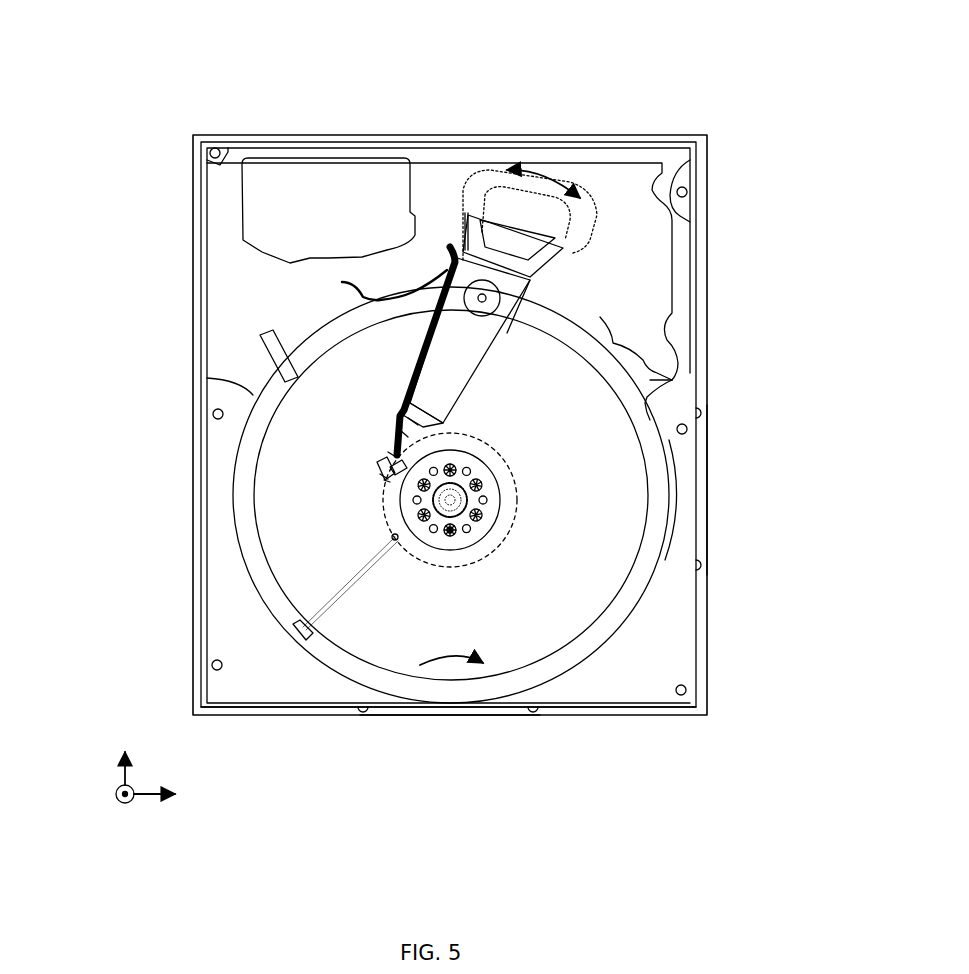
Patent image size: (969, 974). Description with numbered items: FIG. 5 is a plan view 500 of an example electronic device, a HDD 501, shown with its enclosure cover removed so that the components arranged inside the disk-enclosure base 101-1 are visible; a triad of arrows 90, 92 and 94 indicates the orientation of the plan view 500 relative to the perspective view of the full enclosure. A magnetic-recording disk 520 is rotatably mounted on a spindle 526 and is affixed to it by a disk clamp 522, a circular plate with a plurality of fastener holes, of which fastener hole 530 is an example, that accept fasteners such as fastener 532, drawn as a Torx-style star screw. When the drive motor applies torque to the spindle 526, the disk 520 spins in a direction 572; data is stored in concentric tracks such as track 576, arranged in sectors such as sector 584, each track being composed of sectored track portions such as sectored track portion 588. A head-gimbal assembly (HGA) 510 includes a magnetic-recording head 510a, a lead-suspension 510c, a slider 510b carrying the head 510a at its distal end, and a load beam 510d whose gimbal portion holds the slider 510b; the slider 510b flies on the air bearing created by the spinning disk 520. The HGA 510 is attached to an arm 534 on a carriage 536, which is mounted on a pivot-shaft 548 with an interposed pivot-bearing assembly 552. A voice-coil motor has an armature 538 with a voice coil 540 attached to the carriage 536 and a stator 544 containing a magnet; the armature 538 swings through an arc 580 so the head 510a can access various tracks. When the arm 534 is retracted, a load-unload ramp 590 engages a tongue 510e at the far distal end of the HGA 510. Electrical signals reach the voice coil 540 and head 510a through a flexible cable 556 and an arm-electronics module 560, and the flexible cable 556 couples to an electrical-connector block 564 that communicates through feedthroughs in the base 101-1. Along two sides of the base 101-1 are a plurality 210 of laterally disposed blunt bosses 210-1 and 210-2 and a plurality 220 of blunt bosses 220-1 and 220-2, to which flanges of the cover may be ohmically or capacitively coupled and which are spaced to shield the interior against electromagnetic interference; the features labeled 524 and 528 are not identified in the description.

The plan view 500 is at (124, 72).
The HDD 501 is at (684, 135).
The electrical-connector block 564 is at (262, 213).
The flexible cable 556 is at (342, 282).
The arm-electronics module 560 is at (447, 280).
The pivot-bearing assembly 552 is at (478, 298).
The load-unload ramp 590 is at (288, 378).
The head-gimbal assembly 510 is at (120, 390).
The magnetic-recording head 510a is at (385, 477).
The slider 510b is at (392, 455).
The lead-suspension 510c is at (407, 435).
The load beam 510d is at (417, 423).
The tongue 510e is at (387, 481).
The armature 538 is at (463, 240).
The voice coil 540 is at (479, 218).
The arc 580 is at (543, 175).
The stator 544 is at (650, 230).
The pivot-shaft 548 is at (490, 299).
The magnetic-recording disk 520 is at (548, 367).
The disk clamp 522 is at (557, 430).
The disk outer edge 524 is at (632, 433).
The carriage 536 is at (483, 325).
The arm 534 is at (440, 380).
The track 576 is at (477, 471).
The clamp screws 528 is at (495, 518).
The spindle 526 is at (453, 503).
The fastener hole 530 is at (452, 531).
The fastener 532 is at (449, 530).
The sectored track portion 588 is at (397, 543).
The sector 584 is at (296, 632).
The direction 572 is at (448, 667).
The disk-enclosure base 101-1 is at (675, 672).
The blunt boss 220-1 is at (703, 565).
The blunt boss 220-2 is at (700, 412).
The plurality of blunt bosses 220 is at (786, 405).
The blunt boss 210-1 is at (368, 707).
The blunt boss 210-2 is at (530, 707).
The plurality of blunt bosses 210 is at (533, 757).
The arrow 92 is at (122, 763).
The arrow 94 is at (123, 805).
The arrow 90 is at (157, 797).